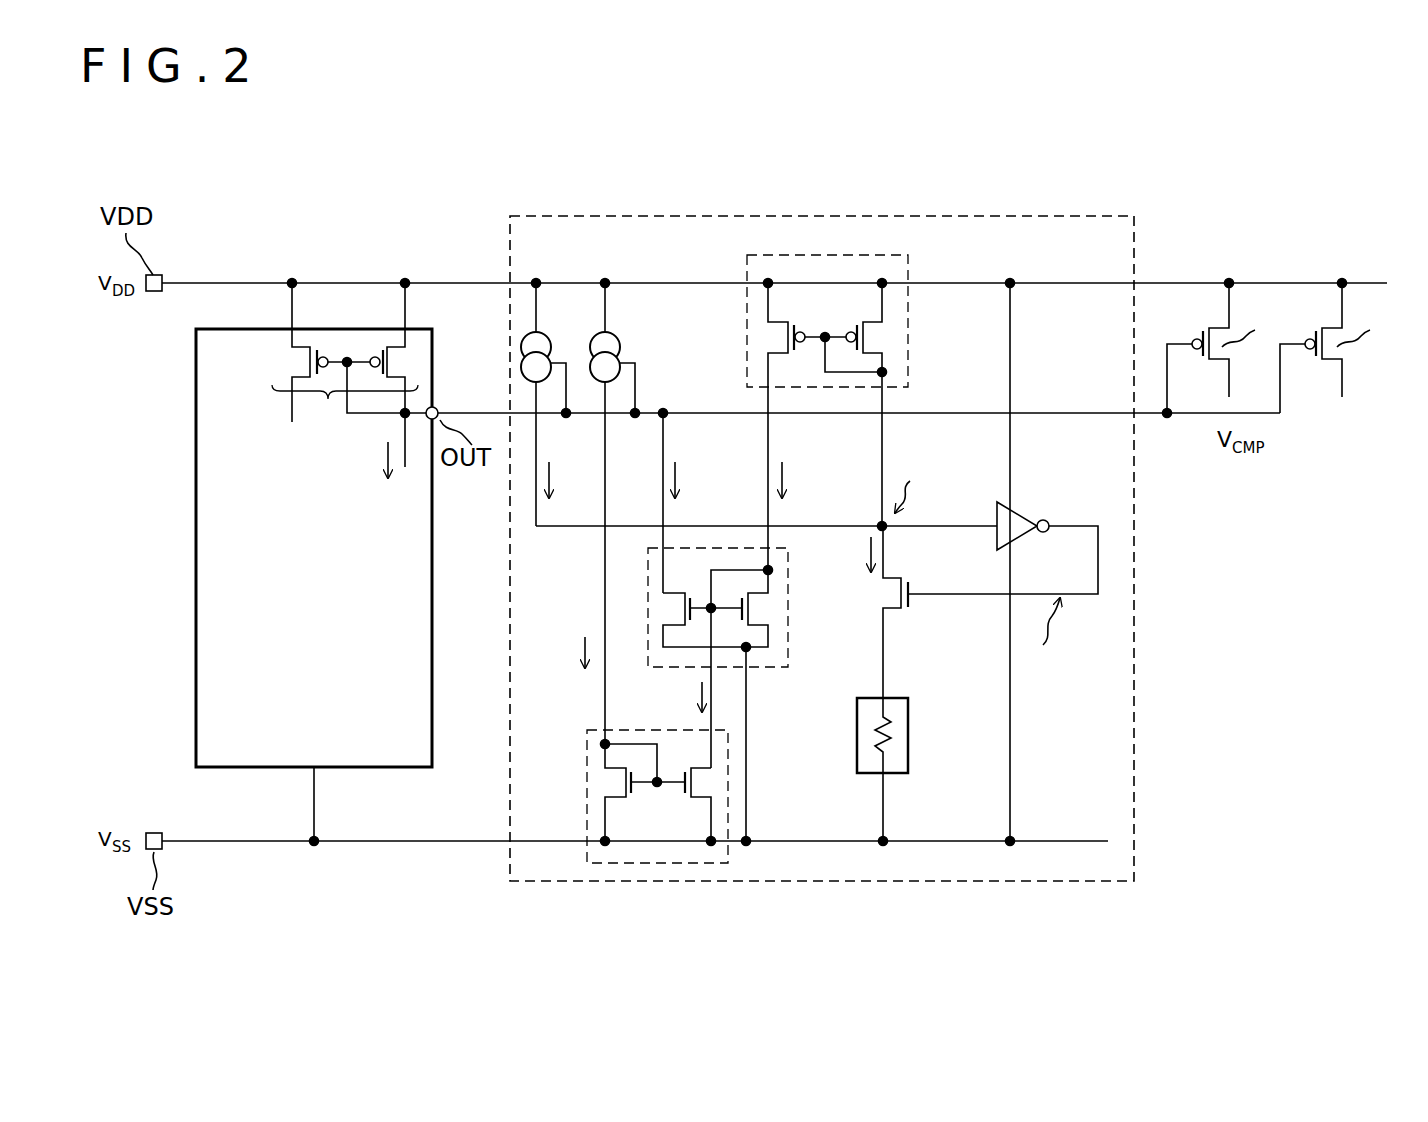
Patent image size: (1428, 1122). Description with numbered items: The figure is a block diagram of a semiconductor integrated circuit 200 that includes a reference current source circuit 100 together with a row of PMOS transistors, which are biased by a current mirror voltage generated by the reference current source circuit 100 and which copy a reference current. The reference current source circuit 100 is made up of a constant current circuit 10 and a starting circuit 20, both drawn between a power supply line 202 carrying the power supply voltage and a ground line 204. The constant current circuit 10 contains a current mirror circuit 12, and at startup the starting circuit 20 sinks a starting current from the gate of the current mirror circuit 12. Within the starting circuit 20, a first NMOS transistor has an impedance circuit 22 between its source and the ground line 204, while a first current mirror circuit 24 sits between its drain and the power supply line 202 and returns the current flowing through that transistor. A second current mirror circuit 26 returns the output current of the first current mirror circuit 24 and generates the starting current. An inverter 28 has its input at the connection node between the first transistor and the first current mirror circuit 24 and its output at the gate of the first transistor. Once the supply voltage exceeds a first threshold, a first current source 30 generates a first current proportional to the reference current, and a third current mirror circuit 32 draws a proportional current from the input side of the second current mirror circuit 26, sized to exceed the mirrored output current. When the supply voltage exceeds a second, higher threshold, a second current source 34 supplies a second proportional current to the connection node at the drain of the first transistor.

The constant current circuit 10 is at (196, 710).
The current mirror circuit 12 is at (349, 373).
The starting circuit 20 is at (732, 883).
The impedance circuit 22 is at (908, 733).
The first current mirror circuit 24 is at (908, 258).
The second current mirror circuit 26 is at (788, 643).
The inverter 28 is at (1020, 508).
The first current source 30 is at (625, 335).
The third current mirror circuit 32 is at (587, 765).
The second current source 34 is at (556, 335).
The reference current source circuit 100 is at (822, 542).
The semiconductor integrated circuit 200 is at (1342, 143).
The power supply line 202 is at (227, 281).
The ground line 204 is at (250, 843).